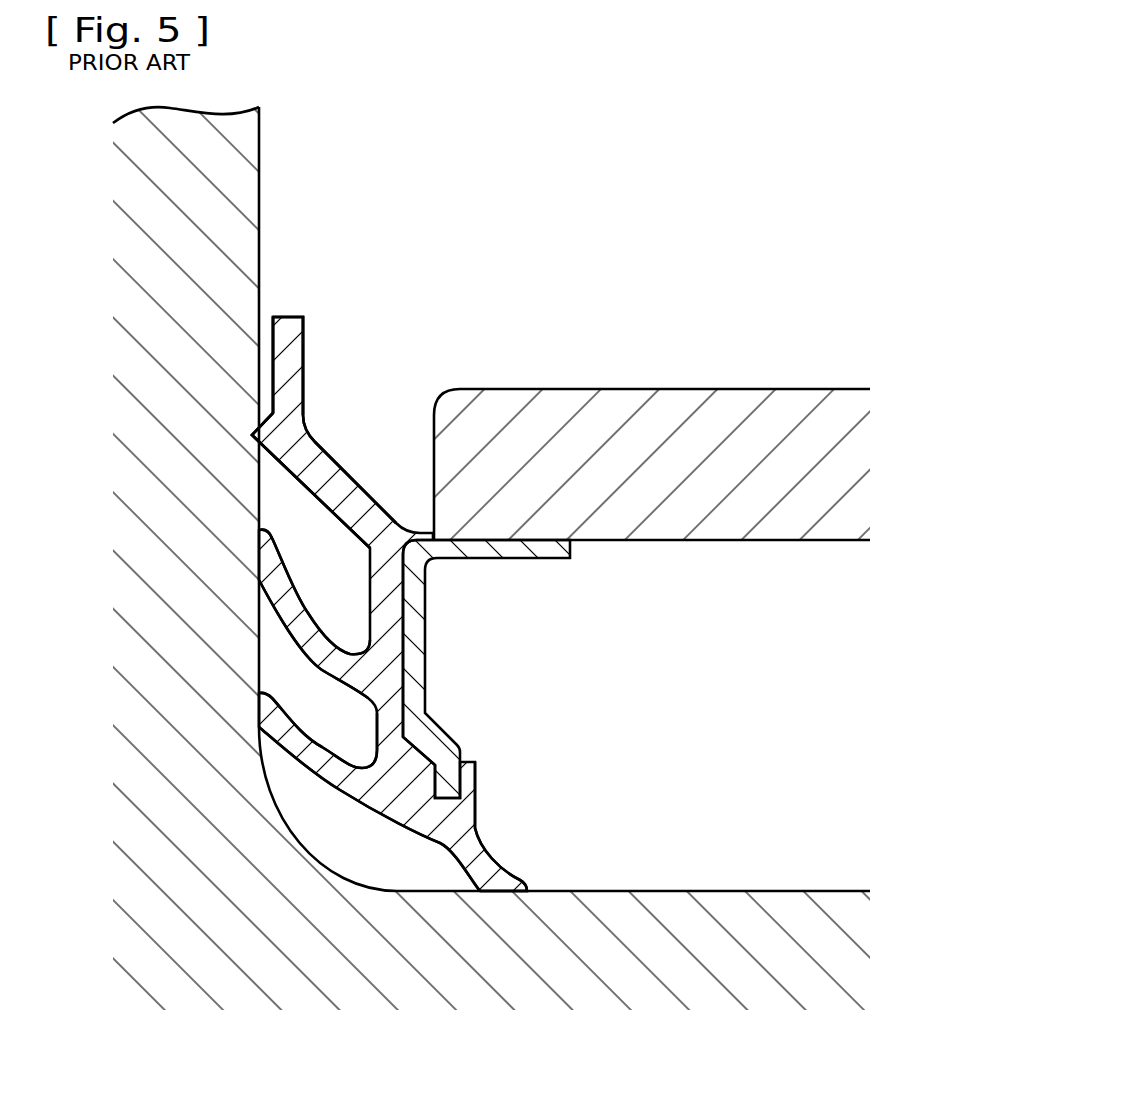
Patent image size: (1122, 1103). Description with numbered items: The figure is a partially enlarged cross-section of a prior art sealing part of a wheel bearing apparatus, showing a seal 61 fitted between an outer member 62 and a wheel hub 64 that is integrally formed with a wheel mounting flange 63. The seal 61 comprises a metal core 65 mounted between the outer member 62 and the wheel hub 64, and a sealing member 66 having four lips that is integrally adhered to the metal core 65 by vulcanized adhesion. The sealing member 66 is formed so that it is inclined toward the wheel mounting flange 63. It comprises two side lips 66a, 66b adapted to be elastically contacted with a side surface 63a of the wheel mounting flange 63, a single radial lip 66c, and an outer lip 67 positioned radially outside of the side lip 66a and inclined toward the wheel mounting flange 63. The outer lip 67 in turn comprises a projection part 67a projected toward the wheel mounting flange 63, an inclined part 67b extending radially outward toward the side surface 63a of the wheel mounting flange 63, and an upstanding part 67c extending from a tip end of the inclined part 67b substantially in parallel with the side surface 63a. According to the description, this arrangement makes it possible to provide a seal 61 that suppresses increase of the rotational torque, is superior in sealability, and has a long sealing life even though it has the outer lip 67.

The seal 61 is at (479, 604).
The outer member 62 is at (773, 425).
The wheel mounting flange 63 is at (207, 175).
The side surface 63a is at (300, 264).
The wheel hub 64 is at (178, 843).
The metal core 65 is at (425, 583).
The sealing member 66 is at (592, 617).
The side lip 66a is at (273, 560).
The side lip 66b is at (273, 708).
The radial lip 66c is at (492, 873).
The outer lip 67 is at (487, 276).
The projection part 67a is at (267, 430).
The inclined part 67b is at (355, 497).
The upstanding part 67c is at (293, 362).